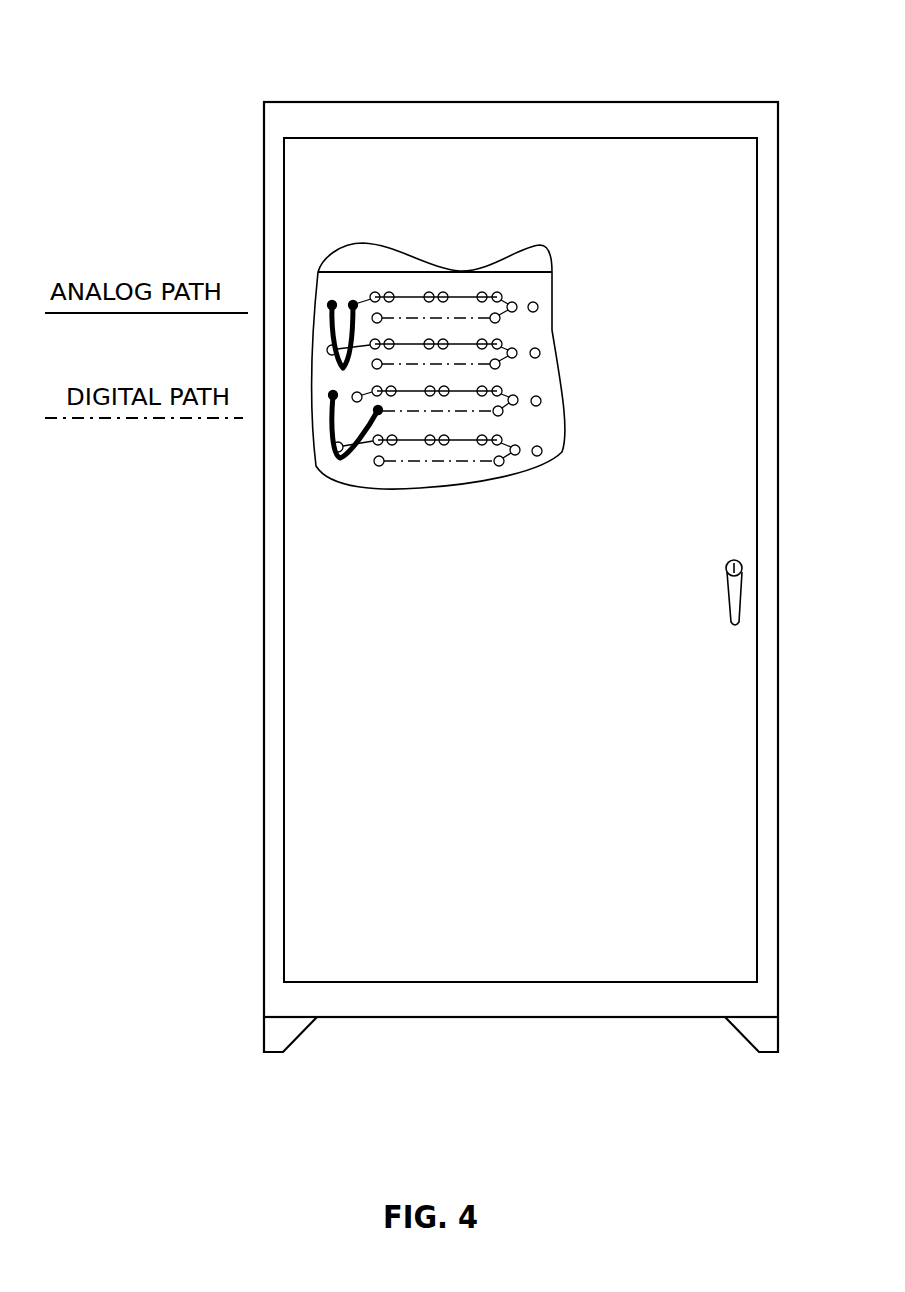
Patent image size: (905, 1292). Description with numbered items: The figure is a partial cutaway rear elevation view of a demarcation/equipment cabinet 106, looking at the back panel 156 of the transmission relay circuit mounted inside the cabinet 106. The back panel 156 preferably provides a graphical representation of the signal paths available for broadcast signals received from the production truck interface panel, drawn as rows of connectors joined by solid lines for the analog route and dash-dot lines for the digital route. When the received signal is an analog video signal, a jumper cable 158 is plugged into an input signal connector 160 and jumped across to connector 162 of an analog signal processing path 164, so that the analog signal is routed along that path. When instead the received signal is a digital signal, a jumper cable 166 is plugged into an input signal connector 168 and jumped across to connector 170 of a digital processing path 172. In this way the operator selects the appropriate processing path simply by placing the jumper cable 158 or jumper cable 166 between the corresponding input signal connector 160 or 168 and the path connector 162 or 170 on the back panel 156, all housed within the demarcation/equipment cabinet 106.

The electrical cabinet 106 is at (420, 58).
The back panel 156 is at (534, 270).
The jumper cable 158 is at (338, 352).
The input signal connector 160 is at (332, 305).
The connector 162 is at (358, 304).
The analog signal processing path 164 is at (462, 295).
The jumper cable 166 is at (340, 460).
The input signal connector 168 is at (333, 395).
The connector 170 is at (378, 410).
The digital processing path 172 is at (468, 412).